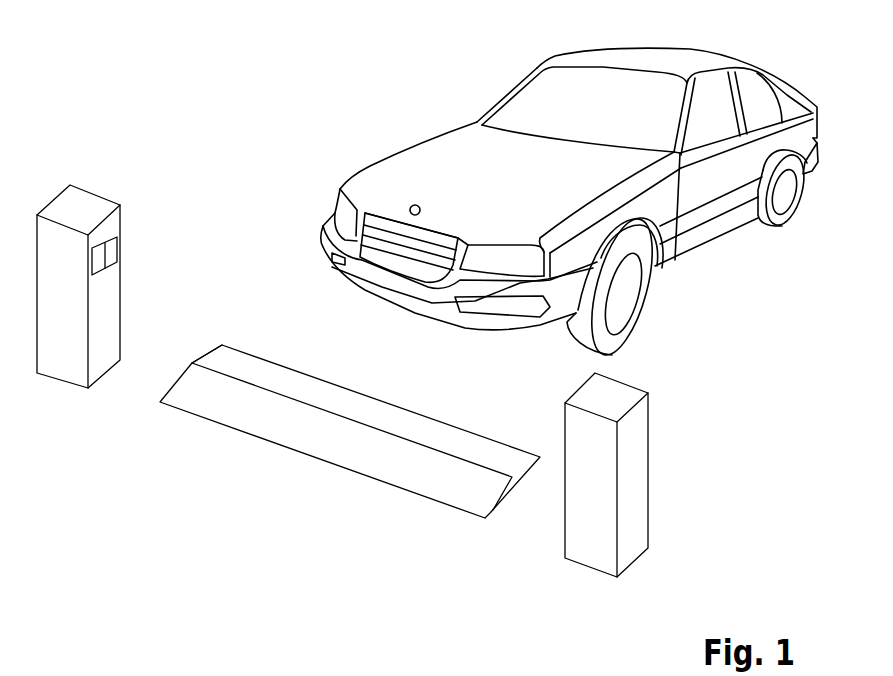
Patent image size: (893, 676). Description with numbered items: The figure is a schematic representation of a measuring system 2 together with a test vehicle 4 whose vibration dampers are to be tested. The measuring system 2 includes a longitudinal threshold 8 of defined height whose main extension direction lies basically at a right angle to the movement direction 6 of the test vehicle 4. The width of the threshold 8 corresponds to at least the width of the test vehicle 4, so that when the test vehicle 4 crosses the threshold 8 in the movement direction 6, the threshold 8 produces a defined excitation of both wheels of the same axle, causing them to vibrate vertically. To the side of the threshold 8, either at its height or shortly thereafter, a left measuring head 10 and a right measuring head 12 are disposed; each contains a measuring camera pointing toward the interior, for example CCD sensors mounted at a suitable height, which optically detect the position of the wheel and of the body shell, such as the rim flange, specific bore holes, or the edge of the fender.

The measuring system 2 is at (667, 445).
The test vehicle 4 is at (388, 106).
The movement direction 6 is at (350, 440).
The threshold 8 is at (398, 473).
The left measuring head 10 is at (638, 483).
The right measuring head 12 is at (85, 207).